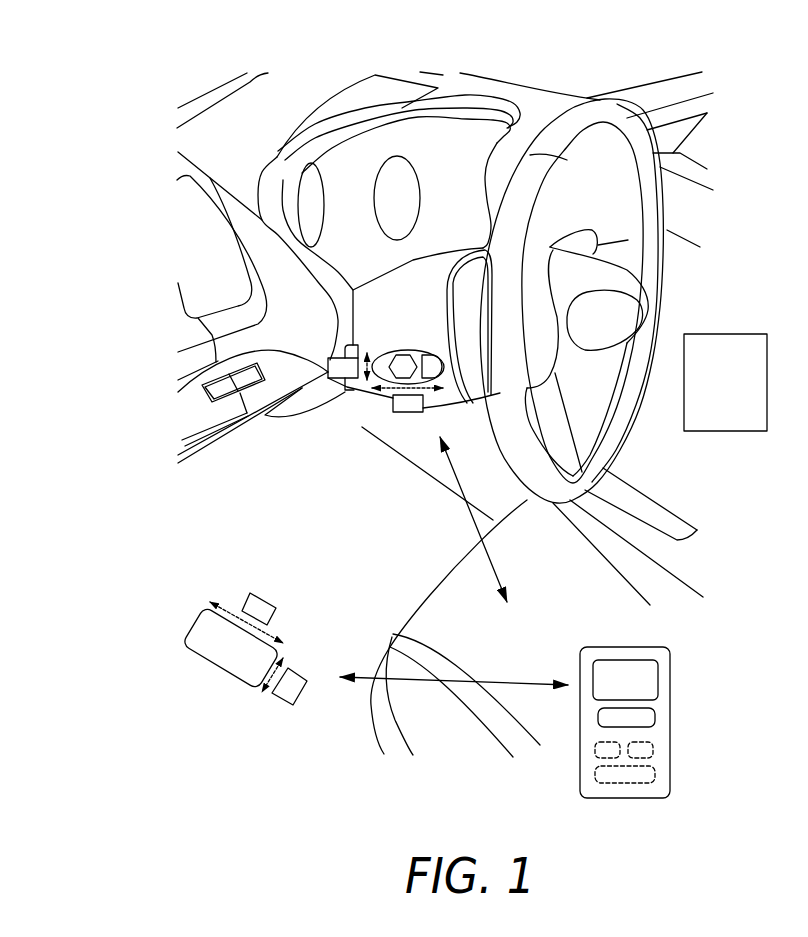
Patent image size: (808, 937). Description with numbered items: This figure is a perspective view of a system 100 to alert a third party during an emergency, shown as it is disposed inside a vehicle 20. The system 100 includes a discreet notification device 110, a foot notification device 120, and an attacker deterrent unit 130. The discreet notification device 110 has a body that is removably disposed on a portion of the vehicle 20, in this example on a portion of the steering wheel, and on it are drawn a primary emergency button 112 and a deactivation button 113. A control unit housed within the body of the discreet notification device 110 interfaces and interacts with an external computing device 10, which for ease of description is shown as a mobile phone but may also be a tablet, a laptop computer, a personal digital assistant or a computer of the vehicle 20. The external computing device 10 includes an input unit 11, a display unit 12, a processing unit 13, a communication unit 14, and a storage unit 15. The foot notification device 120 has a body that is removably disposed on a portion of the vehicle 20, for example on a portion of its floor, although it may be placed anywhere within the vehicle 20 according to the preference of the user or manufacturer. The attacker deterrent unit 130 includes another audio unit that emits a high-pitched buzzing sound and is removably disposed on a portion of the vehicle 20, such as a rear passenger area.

The external computing device 10 is at (634, 703).
The input unit 11 is at (655, 717).
The display unit 12 is at (658, 681).
The processing unit 13 is at (597, 748).
The communication unit 14 is at (653, 750).
The storage unit 15 is at (655, 774).
The vehicle 20 is at (380, 526).
The system 100 is at (259, 130).
The discreet notification device 110 is at (330, 382).
The primary emergency button 112 is at (398, 342).
The deactivation button 113 is at (427, 345).
The foot notification device 120 is at (198, 675).
The attacker deterrent unit 130 is at (731, 334).